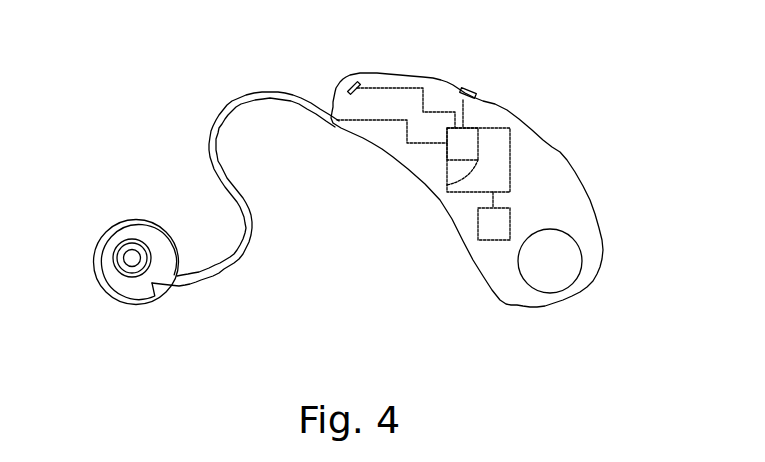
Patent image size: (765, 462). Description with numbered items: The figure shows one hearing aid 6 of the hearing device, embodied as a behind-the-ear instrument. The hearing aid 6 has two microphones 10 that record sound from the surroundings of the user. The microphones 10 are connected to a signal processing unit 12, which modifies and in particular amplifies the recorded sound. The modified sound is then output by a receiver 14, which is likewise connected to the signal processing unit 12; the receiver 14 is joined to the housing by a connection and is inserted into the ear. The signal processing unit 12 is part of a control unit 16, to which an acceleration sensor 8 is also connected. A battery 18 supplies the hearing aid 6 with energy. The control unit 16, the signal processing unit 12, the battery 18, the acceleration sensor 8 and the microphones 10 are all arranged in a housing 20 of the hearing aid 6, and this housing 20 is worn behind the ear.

The hearing aid 6 is at (191, 84).
The acceleration sensor 8 is at (493, 240).
The microphones 10 is at (352, 75).
The signal processing unit 12 is at (447, 185).
The receiver 14 is at (152, 218).
The control unit 16 is at (495, 127).
The battery 18 is at (530, 288).
The housing 20 is at (557, 157).